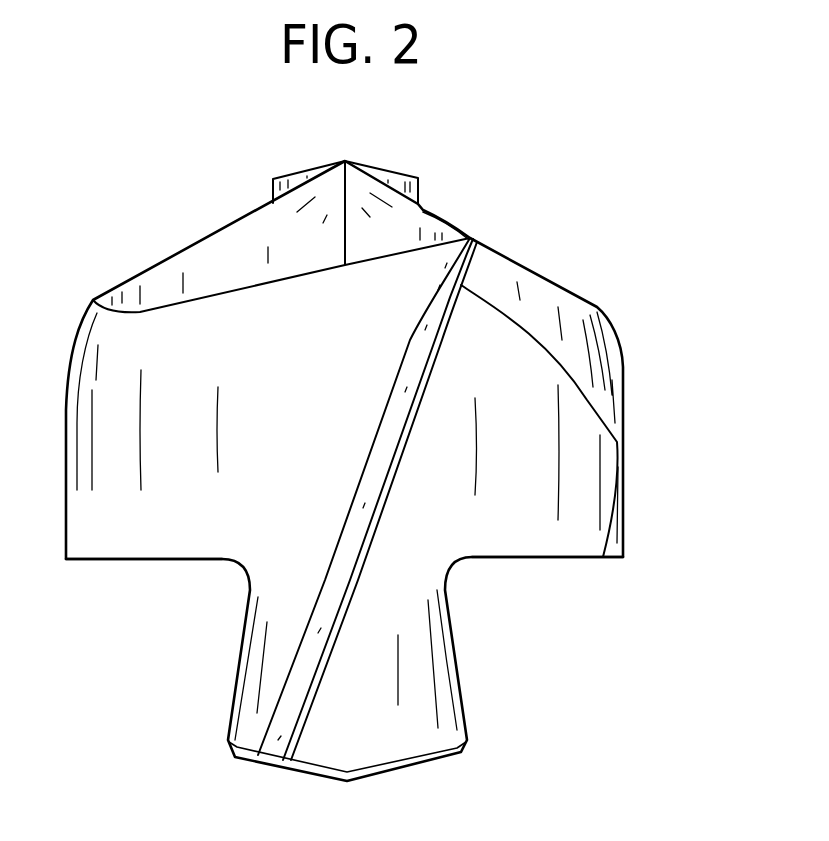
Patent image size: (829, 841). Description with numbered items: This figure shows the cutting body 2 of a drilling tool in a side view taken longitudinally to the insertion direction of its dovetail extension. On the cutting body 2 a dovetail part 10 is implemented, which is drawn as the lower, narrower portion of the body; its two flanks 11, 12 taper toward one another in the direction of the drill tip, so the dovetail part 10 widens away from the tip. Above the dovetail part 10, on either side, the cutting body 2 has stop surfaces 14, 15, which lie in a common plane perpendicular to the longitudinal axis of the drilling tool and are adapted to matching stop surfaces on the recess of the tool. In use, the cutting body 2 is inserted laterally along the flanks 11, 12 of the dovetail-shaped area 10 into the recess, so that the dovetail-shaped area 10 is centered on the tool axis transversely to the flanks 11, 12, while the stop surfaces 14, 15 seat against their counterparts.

The cutting body 2 is at (653, 406).
The dovetail part 10 is at (453, 695).
The flank 11 is at (452, 629).
The flank 12 is at (237, 670).
The stop surface 14 is at (572, 557).
The stop surface 15 is at (120, 559).